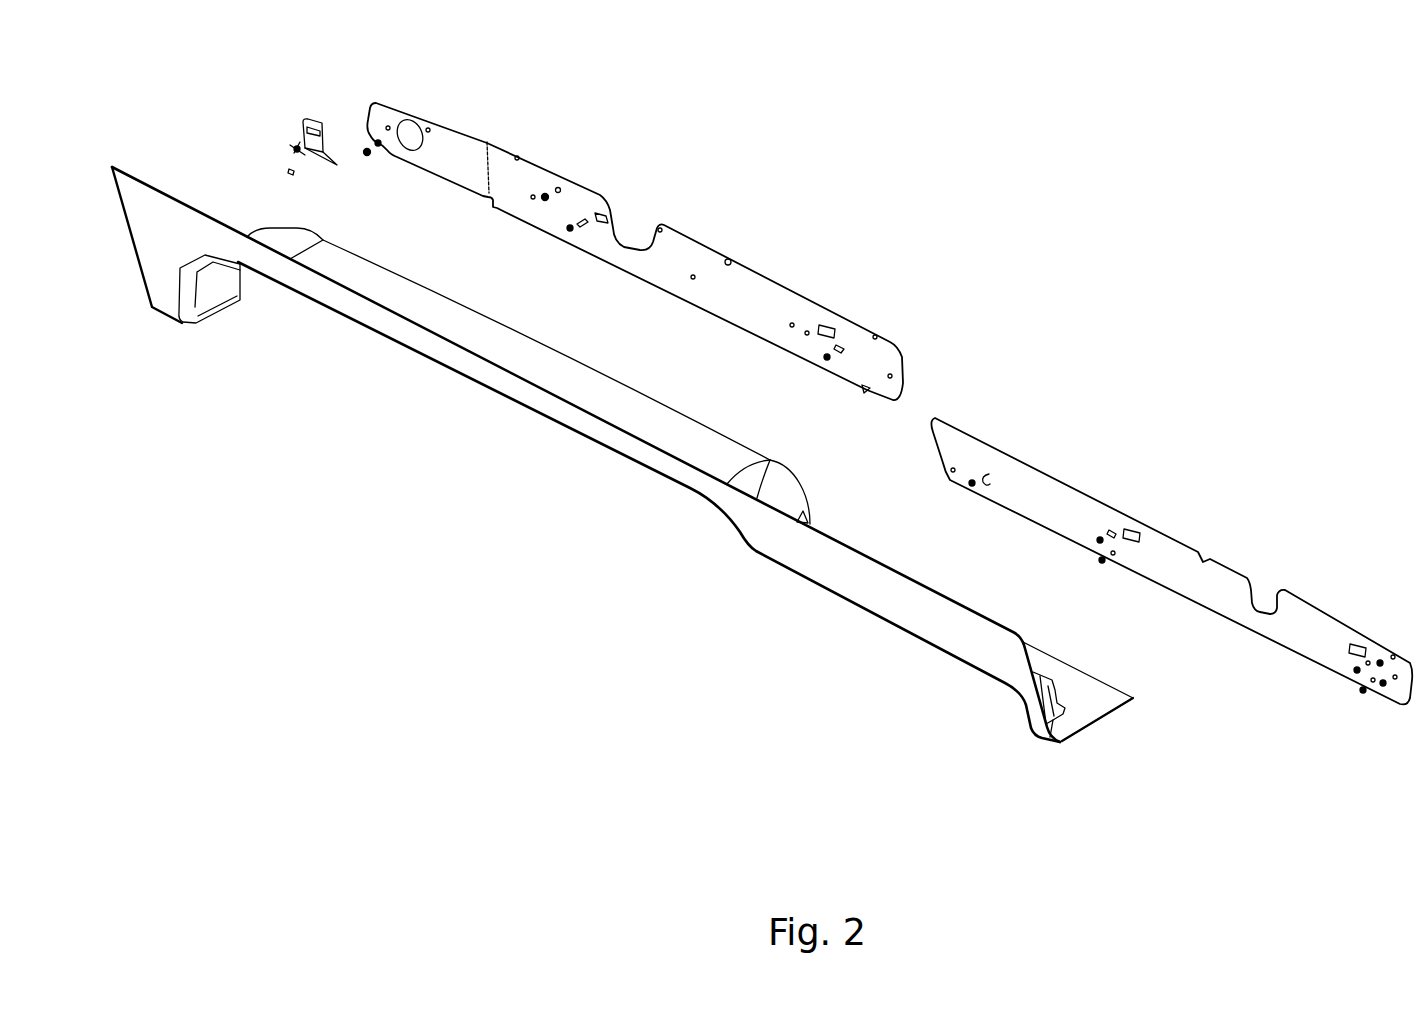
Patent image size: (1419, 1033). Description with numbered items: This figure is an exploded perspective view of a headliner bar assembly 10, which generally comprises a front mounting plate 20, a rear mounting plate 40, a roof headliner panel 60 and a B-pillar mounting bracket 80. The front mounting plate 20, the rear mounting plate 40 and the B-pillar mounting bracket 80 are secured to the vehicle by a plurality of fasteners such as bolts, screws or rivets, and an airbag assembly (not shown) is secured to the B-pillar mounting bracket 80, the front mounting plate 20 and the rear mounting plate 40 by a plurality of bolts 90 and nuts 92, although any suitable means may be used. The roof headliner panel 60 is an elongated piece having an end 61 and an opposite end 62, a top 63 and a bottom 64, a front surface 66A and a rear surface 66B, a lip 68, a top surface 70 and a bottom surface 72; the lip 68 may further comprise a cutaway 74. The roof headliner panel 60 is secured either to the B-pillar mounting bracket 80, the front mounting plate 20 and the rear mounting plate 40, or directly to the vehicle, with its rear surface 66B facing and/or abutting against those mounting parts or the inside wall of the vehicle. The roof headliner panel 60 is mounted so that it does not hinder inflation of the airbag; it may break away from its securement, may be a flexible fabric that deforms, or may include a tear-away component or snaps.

The headliner bar assembly 10 is at (1064, 108).
The front mounting plate 20 is at (719, 229).
The rear mounting plate 40 is at (1065, 460).
The roof headliner panel 60 is at (478, 494).
The end 61 is at (120, 205).
The end 62 is at (1068, 740).
The top 63 is at (831, 523).
The bottom 64 is at (222, 325).
The front surface 66A is at (837, 568).
The rear surface 66B is at (1031, 640).
The lip 68 is at (623, 397).
The top surface 70 is at (660, 427).
The bottom surface 72 is at (1110, 718).
The cutaway 74 is at (921, 567).
The B-pillar mounting bracket 80 is at (330, 104).
The bolt 90 is at (560, 188).
The nut 92 is at (547, 200).